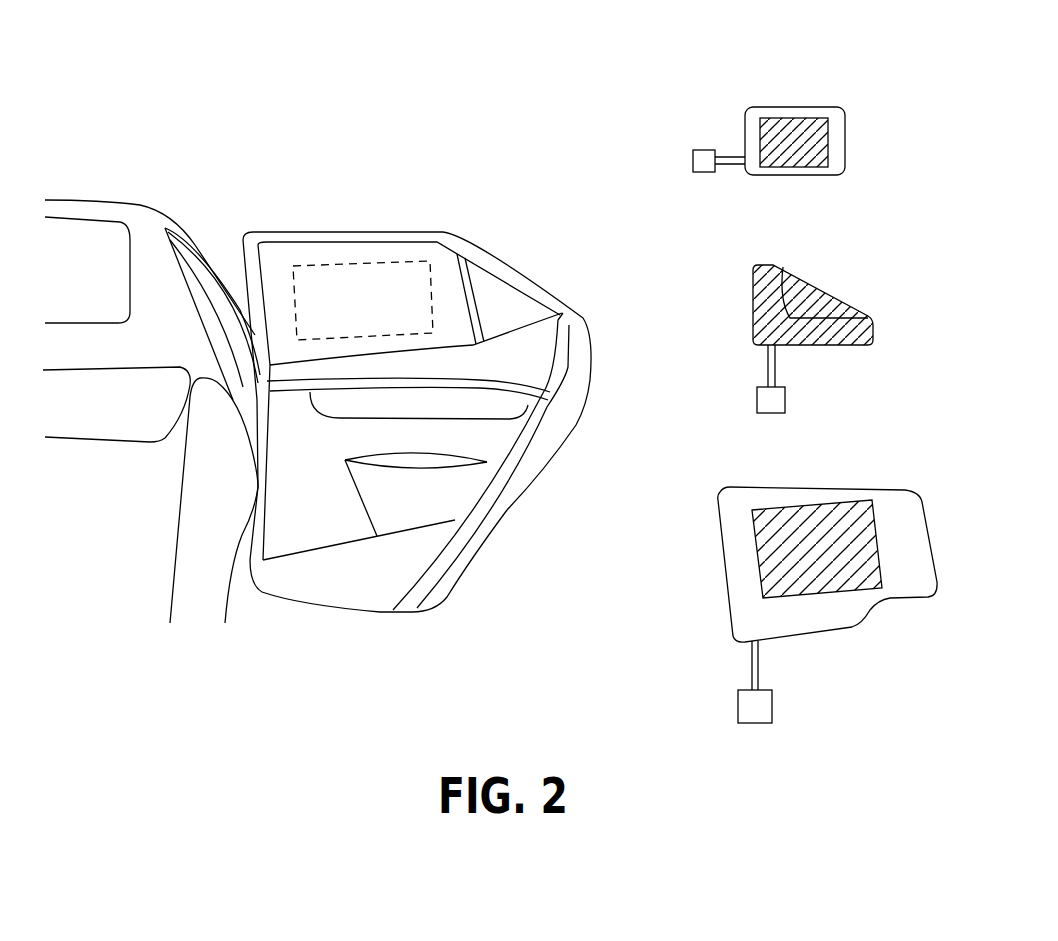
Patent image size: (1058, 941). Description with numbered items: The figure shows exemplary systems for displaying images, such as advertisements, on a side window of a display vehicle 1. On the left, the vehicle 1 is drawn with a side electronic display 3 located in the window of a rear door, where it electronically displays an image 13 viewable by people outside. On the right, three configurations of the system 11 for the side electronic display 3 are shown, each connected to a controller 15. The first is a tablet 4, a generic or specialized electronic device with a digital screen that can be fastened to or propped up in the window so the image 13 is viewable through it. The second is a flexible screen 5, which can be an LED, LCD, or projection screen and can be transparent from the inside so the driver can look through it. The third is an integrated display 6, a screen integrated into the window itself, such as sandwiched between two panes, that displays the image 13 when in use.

The display vehicle 1 is at (143, 222).
The side electronic display 3 is at (380, 285).
The tablet 4 is at (800, 107).
The flexible screen 5 is at (802, 298).
The integrated display 6 is at (930, 540).
The system 11 is at (776, 66).
The image/advertisement 13 is at (780, 165).
The controller 15 is at (710, 150).